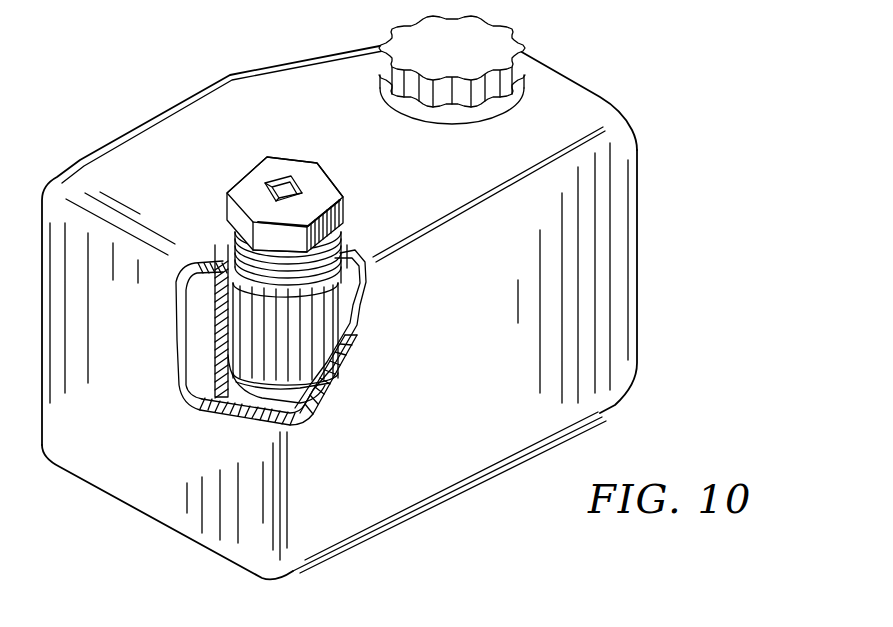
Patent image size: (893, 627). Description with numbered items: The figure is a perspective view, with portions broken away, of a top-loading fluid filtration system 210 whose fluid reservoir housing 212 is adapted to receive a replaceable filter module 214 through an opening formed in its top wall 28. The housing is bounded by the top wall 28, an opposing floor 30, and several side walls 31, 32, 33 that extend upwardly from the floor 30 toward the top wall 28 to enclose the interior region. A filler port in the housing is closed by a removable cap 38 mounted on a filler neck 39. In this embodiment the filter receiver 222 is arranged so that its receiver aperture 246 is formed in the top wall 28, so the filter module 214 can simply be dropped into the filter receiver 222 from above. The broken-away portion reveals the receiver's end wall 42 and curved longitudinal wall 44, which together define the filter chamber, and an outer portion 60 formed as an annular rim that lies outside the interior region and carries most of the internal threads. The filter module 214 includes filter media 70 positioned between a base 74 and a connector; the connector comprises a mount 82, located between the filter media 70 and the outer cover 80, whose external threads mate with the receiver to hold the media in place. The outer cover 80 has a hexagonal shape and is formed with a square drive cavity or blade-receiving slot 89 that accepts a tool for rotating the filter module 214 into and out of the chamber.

The fluid filtration system 210 is at (85, 117).
The fluid reservoir housing 212 is at (616, 97).
The removable cap 38 is at (503, 26).
The filler neck 39 is at (469, 131).
The top wall 28 is at (289, 129).
The square drive cavity or blade-receiving slot 89 is at (281, 184).
The outer cover 80 is at (232, 184).
The filter module 214 is at (351, 194).
The outer portion 60 is at (340, 244).
The side wall 33 is at (638, 238).
The receiver aperture 246 is at (342, 273).
The filter media 70 is at (309, 319).
The mount 82 is at (259, 288).
The longitudinal wall 44 is at (214, 323).
The filter receiver 222 is at (209, 359).
The end wall 42 is at (247, 395).
The base 74 is at (288, 392).
The side wall 32 is at (483, 369).
The side wall 31 is at (136, 452).
The floor 30 is at (458, 480).